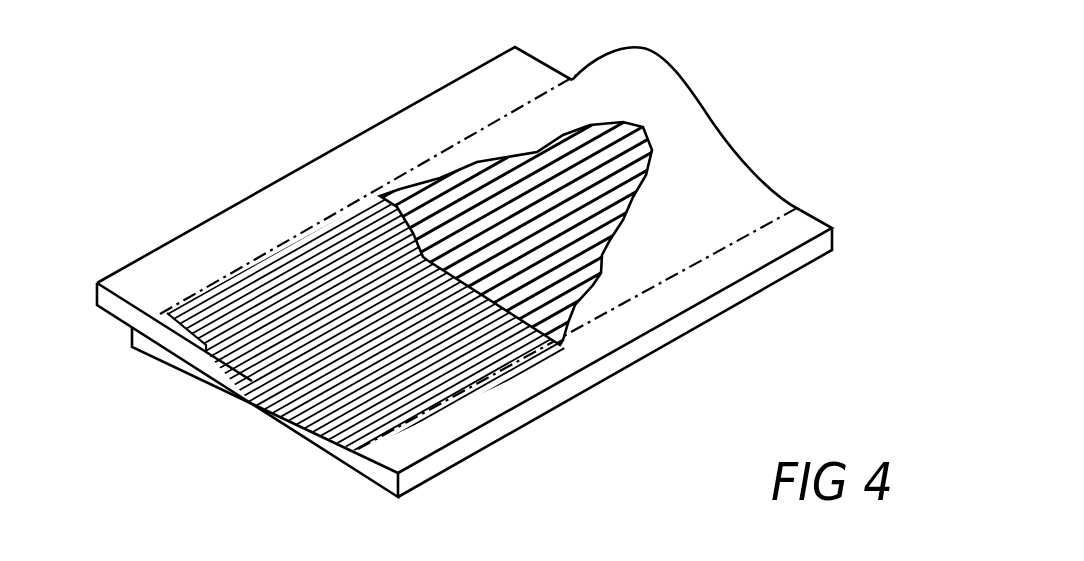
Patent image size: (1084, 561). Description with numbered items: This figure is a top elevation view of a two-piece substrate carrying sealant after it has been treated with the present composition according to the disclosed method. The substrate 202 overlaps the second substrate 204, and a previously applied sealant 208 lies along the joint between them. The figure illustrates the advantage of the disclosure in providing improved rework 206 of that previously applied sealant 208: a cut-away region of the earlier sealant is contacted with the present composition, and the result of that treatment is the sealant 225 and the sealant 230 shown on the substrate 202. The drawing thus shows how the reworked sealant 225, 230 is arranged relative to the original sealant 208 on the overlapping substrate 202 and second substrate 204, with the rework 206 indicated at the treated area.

The substrate 202 is at (832, 230).
The second substrate 204 is at (215, 257).
The rework 206 is at (645, 116).
The previously applied sealant 208 is at (727, 143).
The sealant 225 is at (497, 337).
The sealant 230 is at (560, 263).